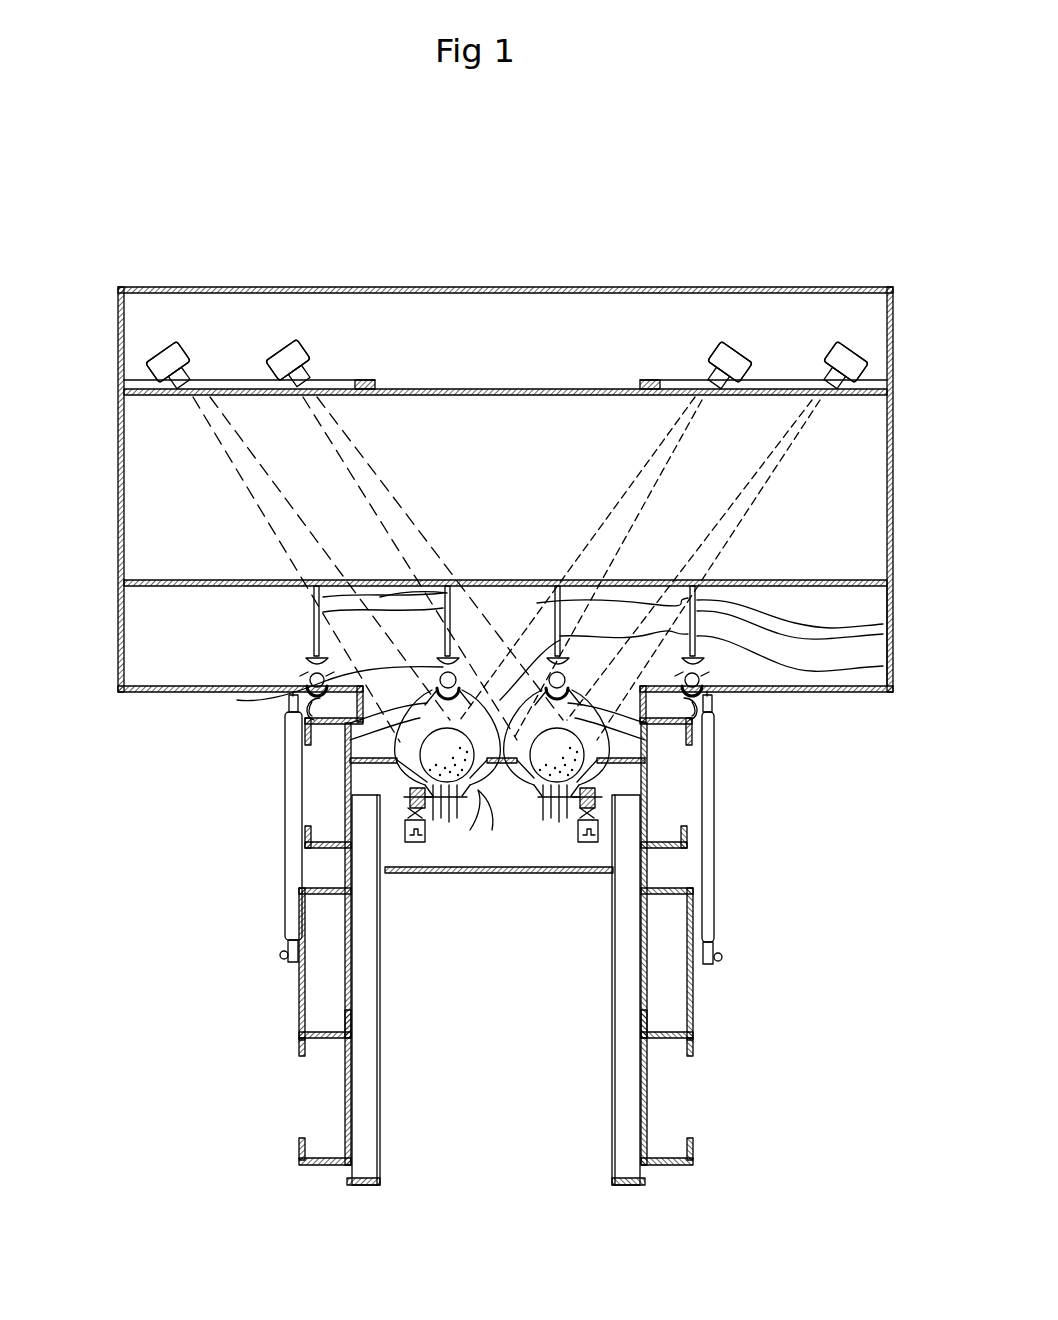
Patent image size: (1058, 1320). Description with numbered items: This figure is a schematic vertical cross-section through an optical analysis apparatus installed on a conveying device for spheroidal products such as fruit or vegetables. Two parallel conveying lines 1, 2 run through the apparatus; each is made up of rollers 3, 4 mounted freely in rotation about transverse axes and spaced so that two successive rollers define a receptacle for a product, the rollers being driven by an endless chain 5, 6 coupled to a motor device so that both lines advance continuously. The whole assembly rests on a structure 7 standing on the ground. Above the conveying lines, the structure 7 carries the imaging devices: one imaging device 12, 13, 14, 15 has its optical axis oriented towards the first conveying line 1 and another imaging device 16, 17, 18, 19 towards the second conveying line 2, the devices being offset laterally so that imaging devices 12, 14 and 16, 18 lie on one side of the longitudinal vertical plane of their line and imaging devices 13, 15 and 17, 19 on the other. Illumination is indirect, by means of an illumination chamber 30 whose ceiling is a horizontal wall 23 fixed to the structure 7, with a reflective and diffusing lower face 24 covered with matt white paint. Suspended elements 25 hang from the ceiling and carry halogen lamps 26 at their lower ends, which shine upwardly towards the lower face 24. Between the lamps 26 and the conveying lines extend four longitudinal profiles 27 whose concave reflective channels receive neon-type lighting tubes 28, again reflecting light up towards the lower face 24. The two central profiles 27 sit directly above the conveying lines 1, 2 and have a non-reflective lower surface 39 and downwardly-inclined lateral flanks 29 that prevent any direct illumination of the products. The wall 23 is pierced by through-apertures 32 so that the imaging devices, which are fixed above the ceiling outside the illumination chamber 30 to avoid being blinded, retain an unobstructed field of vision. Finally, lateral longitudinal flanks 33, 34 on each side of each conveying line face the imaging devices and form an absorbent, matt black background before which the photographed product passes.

The first conveying line 1 is at (447, 845).
The second conveying line 2 is at (548, 845).
The roller 3 is at (345, 868).
The roller 4 is at (600, 830).
The endless chain 5 is at (425, 805).
The endless chain 6 is at (600, 780).
The structure 7 is at (348, 1078).
The imaging device 12 is at (165, 355).
The imaging device 13 is at (736, 358).
The imaging device 14 is at (168, 361).
The imaging device 15 is at (730, 361).
The imaging device 16 is at (290, 360).
The imaging device 17 is at (848, 362).
The imaging device 18 is at (288, 359).
The imaging device 19 is at (846, 361).
The horizontal wall 23 is at (800, 580).
The lower face 24 is at (840, 590).
The suspended elements 25 is at (312, 612).
The halogen lamps 26 is at (312, 650).
The longitudinal profiles 27 is at (292, 692).
The lighting tubes 28 is at (294, 690).
The lateral flanks 29 is at (540, 700).
The illumination chamber 30 is at (160, 597).
The through-apertures 32 is at (450, 640).
The lateral longitudinal flank 33 is at (430, 760).
The lateral longitudinal flank 34 is at (495, 790).
The non-reflective lower surface 39 is at (470, 830).